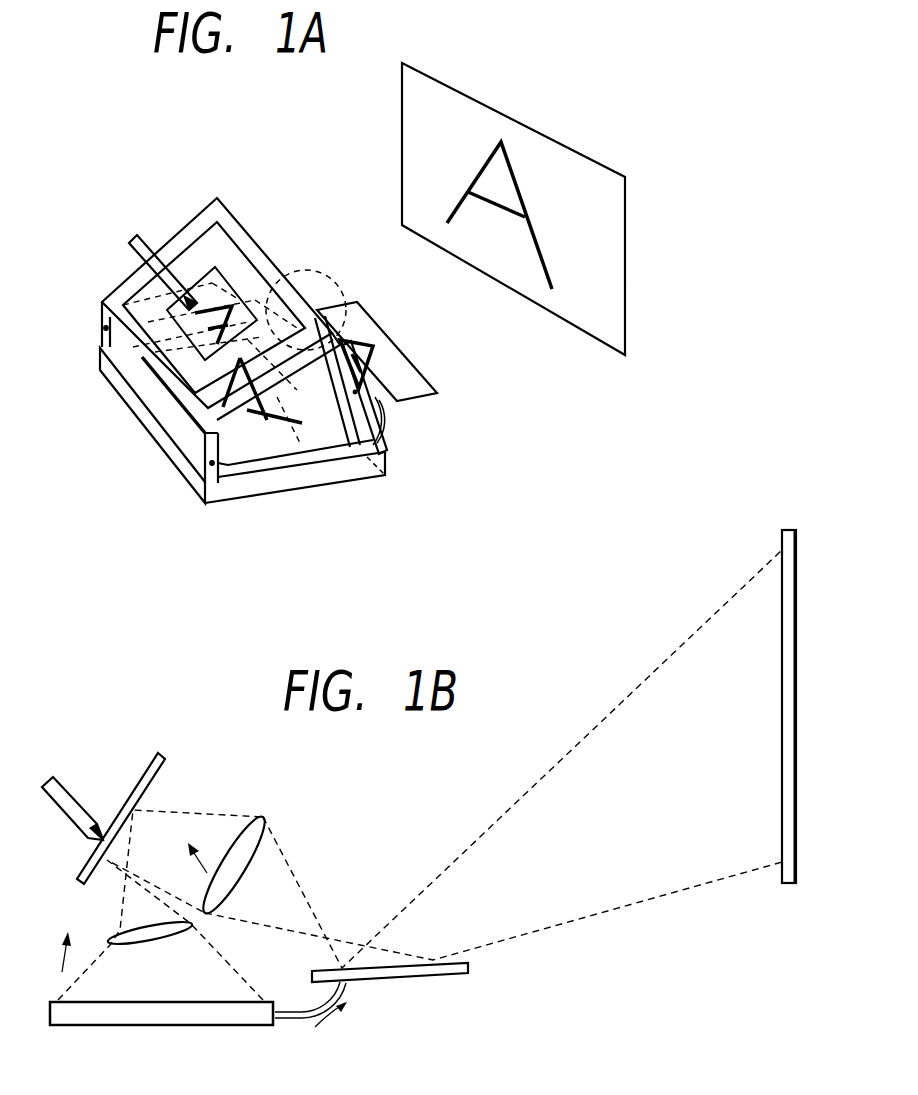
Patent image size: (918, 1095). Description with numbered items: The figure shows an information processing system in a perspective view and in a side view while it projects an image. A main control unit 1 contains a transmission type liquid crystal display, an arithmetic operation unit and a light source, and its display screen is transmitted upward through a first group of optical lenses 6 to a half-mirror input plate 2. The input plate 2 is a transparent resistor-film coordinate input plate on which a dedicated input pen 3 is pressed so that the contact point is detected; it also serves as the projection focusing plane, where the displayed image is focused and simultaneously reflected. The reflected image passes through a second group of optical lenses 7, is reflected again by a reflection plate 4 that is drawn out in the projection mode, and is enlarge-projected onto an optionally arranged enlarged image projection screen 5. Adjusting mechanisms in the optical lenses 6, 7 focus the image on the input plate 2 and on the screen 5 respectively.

In FIG. 1A, the main control unit 1 is at (245, 488).
In FIG. 1B, the main control unit 1 is at (158, 1025).
In FIG. 1A, the half-mirror input plate 2 is at (198, 243).
In FIG. 1B, the half-mirror input plate 2 is at (163, 770).
In FIG. 1A, the input pen 3 is at (130, 240).
In FIG. 1B, the input pen 3 is at (63, 793).
In FIG. 1A, the reflection plate 4 is at (423, 378).
In FIG. 1B, the reflection plate 4 is at (432, 978).
In FIG. 1A, the enlarged image projection screen 5 is at (625, 261).
In FIG. 1B, the enlarged image projection screen 5 is at (782, 777).
In FIG. 1A, the group of optical lenses 6 is at (387, 470).
In FIG. 1B, the group of optical lenses 6 is at (153, 945).
In FIG. 1A, the group of optical lenses 7 is at (320, 280).
In FIG. 1B, the group of optical lenses 7 is at (263, 843).